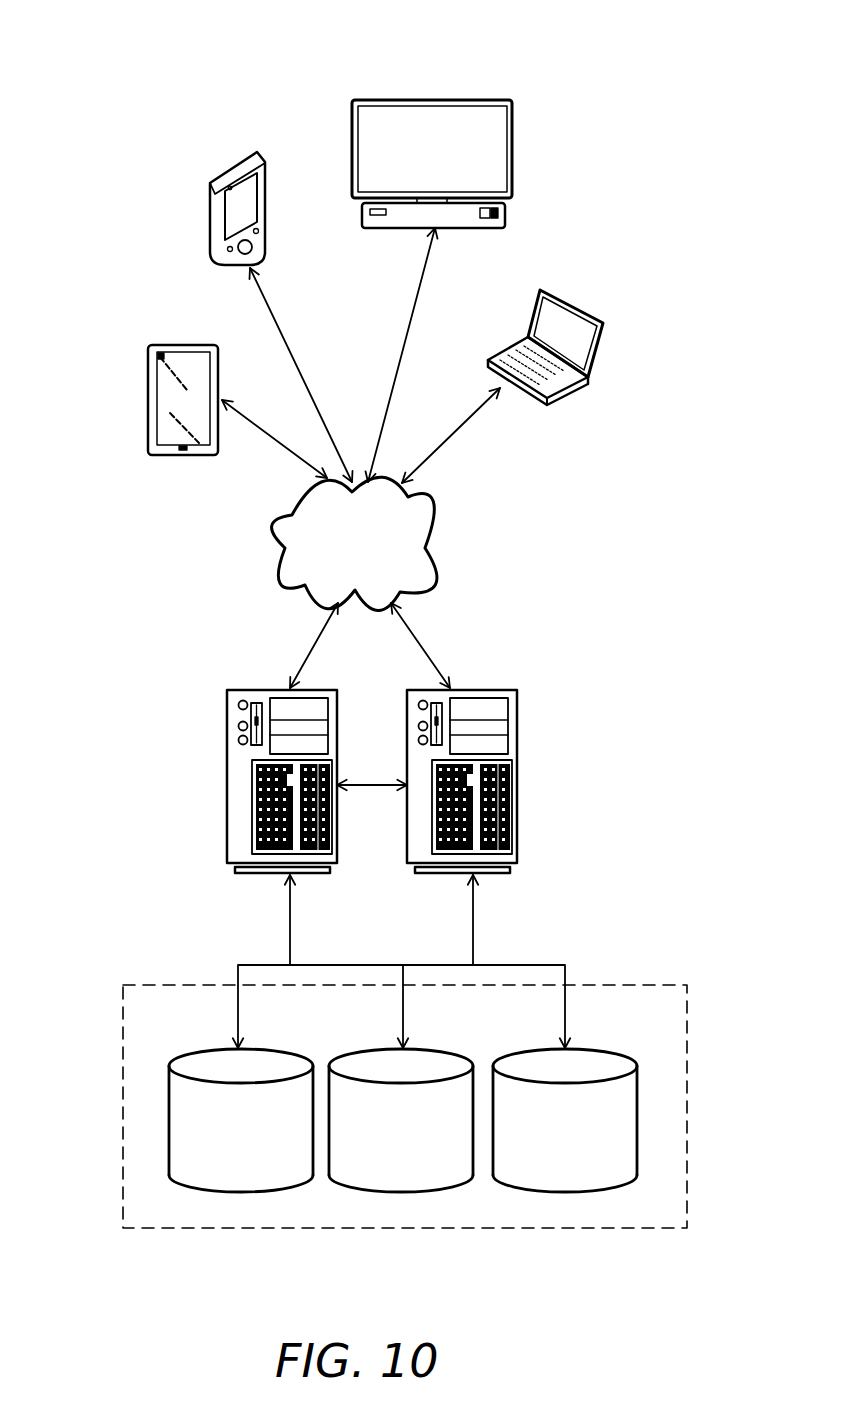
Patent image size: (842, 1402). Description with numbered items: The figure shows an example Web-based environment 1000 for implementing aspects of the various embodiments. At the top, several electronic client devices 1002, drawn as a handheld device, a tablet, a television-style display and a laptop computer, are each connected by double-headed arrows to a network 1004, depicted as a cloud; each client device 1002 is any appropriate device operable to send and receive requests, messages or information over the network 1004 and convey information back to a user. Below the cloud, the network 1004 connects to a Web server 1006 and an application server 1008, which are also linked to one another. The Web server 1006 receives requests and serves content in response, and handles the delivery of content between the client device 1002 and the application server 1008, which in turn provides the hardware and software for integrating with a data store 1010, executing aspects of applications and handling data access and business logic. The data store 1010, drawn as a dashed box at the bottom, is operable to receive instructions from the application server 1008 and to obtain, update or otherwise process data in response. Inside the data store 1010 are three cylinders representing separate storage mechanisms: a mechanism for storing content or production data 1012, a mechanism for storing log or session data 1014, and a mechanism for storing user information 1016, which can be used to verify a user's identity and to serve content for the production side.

The environment 1000 is at (723, 96).
The electronic client device 1002 is at (303, 139).
The network 1004 is at (280, 548).
The Web server 1006 is at (227, 845).
The application server 1008 is at (405, 858).
The data store 1010 is at (162, 1228).
The content data store 1012 is at (258, 1192).
The session data store 1014 is at (425, 1192).
The user information data store 1016 is at (585, 1192).